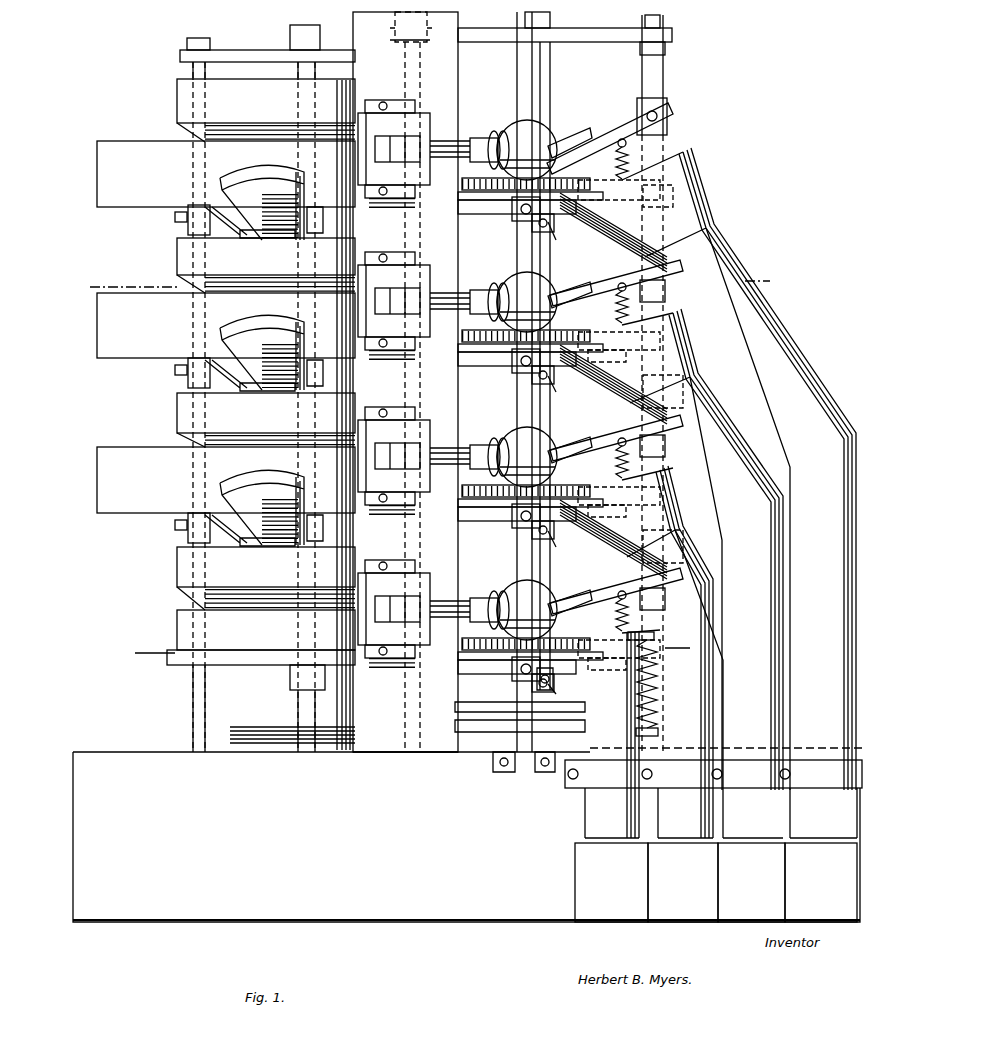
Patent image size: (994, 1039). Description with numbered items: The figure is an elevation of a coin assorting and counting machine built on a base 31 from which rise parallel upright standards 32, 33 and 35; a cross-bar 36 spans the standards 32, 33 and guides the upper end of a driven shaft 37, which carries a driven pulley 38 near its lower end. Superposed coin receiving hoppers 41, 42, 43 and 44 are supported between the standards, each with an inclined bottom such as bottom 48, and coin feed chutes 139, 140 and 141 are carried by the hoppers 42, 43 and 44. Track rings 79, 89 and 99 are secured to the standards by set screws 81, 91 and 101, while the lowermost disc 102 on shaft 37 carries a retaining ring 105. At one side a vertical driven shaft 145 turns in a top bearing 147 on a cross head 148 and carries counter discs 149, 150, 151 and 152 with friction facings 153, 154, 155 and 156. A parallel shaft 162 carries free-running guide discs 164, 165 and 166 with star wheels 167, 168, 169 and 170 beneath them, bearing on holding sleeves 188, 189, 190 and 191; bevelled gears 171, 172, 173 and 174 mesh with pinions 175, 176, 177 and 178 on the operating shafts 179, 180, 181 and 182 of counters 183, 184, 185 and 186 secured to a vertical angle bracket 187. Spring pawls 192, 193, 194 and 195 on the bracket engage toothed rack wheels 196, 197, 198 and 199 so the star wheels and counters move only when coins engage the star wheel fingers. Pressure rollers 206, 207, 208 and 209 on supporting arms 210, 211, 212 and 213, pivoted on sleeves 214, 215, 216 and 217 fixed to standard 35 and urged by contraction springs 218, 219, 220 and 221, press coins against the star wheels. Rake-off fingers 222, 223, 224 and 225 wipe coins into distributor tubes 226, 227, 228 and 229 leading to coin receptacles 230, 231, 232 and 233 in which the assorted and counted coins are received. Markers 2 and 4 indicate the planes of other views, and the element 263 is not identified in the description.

The section line 2- 2 is at (428, 284).
The section line 4- 4 is at (404, 651).
The base 31 is at (228, 922).
The upright supporting standard 32 is at (200, 38).
The upright supporting standard 33 is at (402, 65).
The upright supporting standard 35 is at (662, 15).
The cross-bar 36 is at (255, 52).
The driven shaft 37 is at (306, 25).
The driven pulley 38 is at (270, 745).
The coin receiving hopper 41 is at (185, 100).
The coin receiving hopper 42 is at (185, 258).
The coin receiving hopper 43 is at (185, 412).
The coin receiving hopper 44 is at (185, 562).
The downwardly inclined bottom 48 is at (255, 128).
The track ring 79 is at (130, 141).
The set screws 81 is at (175, 216).
The track ring 89 is at (132, 358).
The set screws 91 is at (176, 372).
The track ring 99 is at (122, 458).
The set screws 101 is at (175, 526).
The lowermost disc 102 is at (255, 665).
The retaining ring 105 is at (185, 618).
The coin feed chute 139 is at (262, 202).
The coin feed chute 140 is at (262, 352).
The coin feed chute 141 is at (262, 507).
The vertical driven shaft 145 is at (550, 90).
The top bearing 147 is at (550, 20).
The cross head 148 is at (598, 42).
The counter disc 149 is at (532, 224).
The counter disc 150 is at (532, 376).
The counter disc 151 is at (512, 539).
The counter disc 152 is at (512, 688).
The friction facing 153 is at (605, 225).
The friction facing 154 is at (613, 384).
The friction facing 155 is at (613, 539).
The friction facing 156 is at (624, 684).
The shaft 162 is at (522, 90).
The guide disc 164 is at (605, 318).
The guide disc 165 is at (639, 511).
The guide disc 166 is at (608, 621).
The star wheel 167 is at (512, 208).
The star wheel 168 is at (512, 360).
The star wheel 169 is at (501, 522).
The star wheel 170 is at (501, 672).
The bevelled gear 171 is at (548, 150).
The bevelled gear 172 is at (552, 308).
The bevelled gear 173 is at (547, 457).
The bevelled gear 174 is at (555, 610).
The pinion 175 is at (496, 130).
The pinion 176 is at (496, 282).
The pinion 177 is at (498, 442).
The pinion 178 is at (497, 596).
The operating shaft 179 is at (470, 145).
The operating shaft 180 is at (478, 296).
The operating shaft 181 is at (465, 446).
The operating shaft 182 is at (464, 600).
The counter 183 is at (418, 115).
The counter 184 is at (418, 268).
The counter 185 is at (405, 458).
The counter 186 is at (406, 611).
The vertical angle bracket 187 is at (392, 740).
The holding sleeve 188 is at (564, 234).
The holding sleeve 189 is at (564, 387).
The holding sleeve 190 is at (564, 542).
The holding sleeve 191 is at (564, 692).
The spring pawl 192 is at (460, 200).
The spring pawl 193 is at (460, 346).
The spring pawl 194 is at (518, 507).
The spring pawl 195 is at (518, 651).
The toothed rack wheel 196 is at (560, 178).
The toothed rack wheel 197 is at (526, 328).
The toothed rack wheel 198 is at (526, 483).
The toothed rack wheel 199 is at (526, 634).
The pressure roller 206 is at (570, 132).
The pressure roller 207 is at (556, 292).
The pressure roller 208 is at (570, 440).
The pressure roller 209 is at (570, 591).
The supporting arm 210 is at (616, 126).
The supporting arm 211 is at (604, 280).
The supporting arm 212 is at (616, 435).
The supporting arm 213 is at (616, 588).
The sleeve 214 is at (668, 104).
The sleeve 215 is at (666, 286).
The sleeve 216 is at (675, 442).
The sleeve 217 is at (672, 599).
The contraction spring 218 is at (645, 165).
The contraction spring 219 is at (640, 323).
The contraction spring 220 is at (673, 459).
The contraction spring 221 is at (659, 612).
The rake-off finger 222 is at (625, 193).
The rake-off finger 223 is at (619, 339).
The rake-off finger 224 is at (619, 494).
The rake-off finger 225 is at (619, 647).
The distributor tube 226 is at (580, 800).
The distributor tube 227 is at (700, 670).
The distributor tube 228 is at (752, 516).
The distributor tube 229 is at (785, 330).
The coin receptacle 230 is at (611, 882).
The coin receptacle 231 is at (683, 882).
The coin receptacle 232 is at (751, 882).
The coin receptacle 233 is at (821, 882).
The plate 263 is at (565, 192).